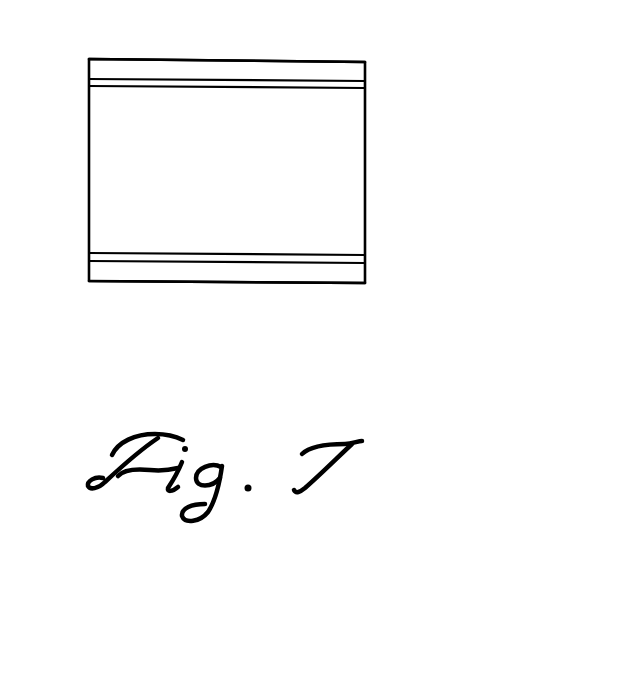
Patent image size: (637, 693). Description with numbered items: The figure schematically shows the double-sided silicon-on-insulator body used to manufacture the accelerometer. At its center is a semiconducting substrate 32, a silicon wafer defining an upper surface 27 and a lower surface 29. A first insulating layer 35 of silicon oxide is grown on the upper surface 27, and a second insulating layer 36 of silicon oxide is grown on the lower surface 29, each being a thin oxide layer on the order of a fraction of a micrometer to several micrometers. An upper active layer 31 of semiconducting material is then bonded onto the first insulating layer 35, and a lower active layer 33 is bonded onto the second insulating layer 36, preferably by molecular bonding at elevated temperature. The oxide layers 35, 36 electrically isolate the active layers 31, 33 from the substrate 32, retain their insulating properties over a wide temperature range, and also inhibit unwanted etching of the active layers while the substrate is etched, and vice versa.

The upper surface 27 is at (120, 84).
The lower surface 29 is at (137, 254).
The upper active layer 31 is at (337, 62).
The substrate 32 is at (393, 192).
The lower active layer 33 is at (327, 284).
The first insulating layer 35 is at (366, 87).
The second insulating layer 36 is at (365, 263).